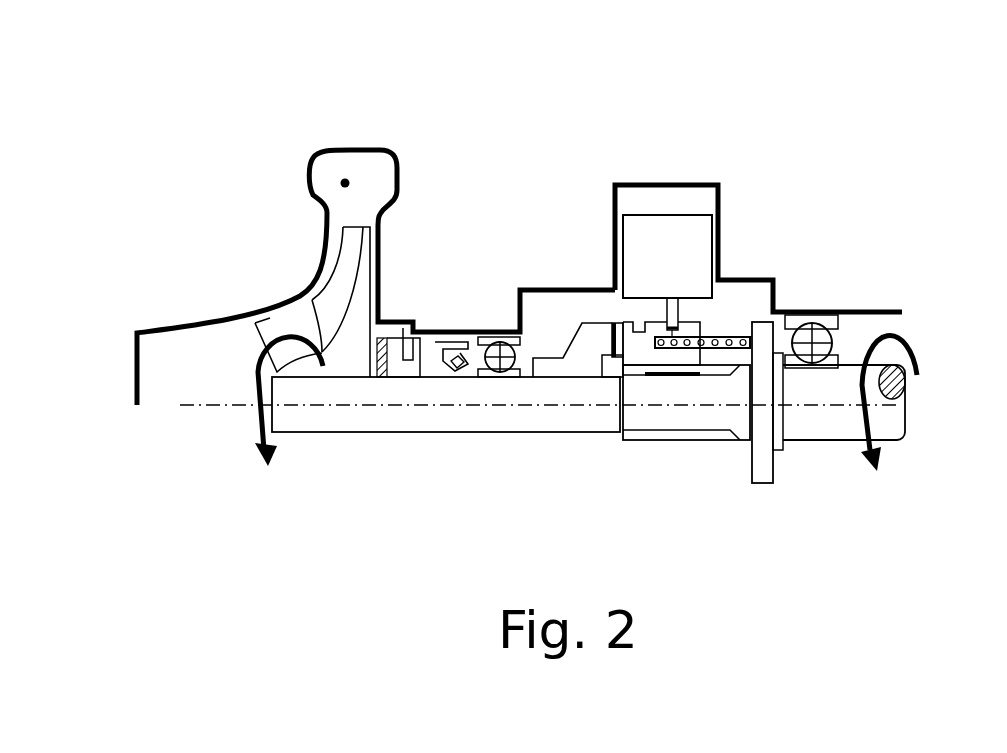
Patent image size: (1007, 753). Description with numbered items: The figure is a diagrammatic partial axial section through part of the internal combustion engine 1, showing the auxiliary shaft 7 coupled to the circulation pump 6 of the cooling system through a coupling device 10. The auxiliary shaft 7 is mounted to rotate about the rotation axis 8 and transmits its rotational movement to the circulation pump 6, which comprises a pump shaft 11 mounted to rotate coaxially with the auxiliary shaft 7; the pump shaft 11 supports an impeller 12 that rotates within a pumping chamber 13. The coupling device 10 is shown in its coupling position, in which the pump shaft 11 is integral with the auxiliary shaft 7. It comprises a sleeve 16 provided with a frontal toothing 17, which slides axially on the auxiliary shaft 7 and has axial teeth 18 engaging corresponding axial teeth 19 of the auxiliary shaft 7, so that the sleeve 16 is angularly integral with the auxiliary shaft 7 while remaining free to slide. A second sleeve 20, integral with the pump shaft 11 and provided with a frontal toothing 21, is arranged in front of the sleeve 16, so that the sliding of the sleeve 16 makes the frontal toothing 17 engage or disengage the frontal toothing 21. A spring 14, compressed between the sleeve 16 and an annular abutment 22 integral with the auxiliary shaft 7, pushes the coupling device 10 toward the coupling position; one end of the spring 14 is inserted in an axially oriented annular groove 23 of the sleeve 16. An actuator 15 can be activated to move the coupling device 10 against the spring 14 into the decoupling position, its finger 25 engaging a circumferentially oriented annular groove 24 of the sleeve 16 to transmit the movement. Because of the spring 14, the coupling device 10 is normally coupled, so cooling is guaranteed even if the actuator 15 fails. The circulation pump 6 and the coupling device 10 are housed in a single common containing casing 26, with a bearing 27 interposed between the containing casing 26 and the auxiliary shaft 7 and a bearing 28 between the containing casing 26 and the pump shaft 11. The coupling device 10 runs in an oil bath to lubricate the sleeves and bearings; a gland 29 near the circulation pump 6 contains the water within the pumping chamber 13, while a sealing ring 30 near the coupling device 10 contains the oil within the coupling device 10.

The internal combustion engine 1 is at (850, 588).
The circulation pump 6 is at (286, 104).
The auxiliary shaft 7 is at (880, 427).
The rotation axis 8 is at (198, 403).
The coupling device 10 is at (699, 140).
The pump shaft 11 is at (368, 420).
The impeller 12 is at (353, 328).
The pumping chamber 13 is at (346, 180).
The spring 14 is at (739, 336).
The actuator 15 is at (643, 224).
The sleeve 16 is at (645, 348).
The frontal toothing 17 is at (616, 333).
The axial teeth 18 is at (685, 441).
The axial teeth 19 is at (665, 367).
The sleeve 20 is at (563, 366).
The frontal toothing 21 is at (610, 353).
The annular abutment 22 is at (766, 462).
The axially oriented annular groove 23 is at (688, 348).
The circumferentially oriented annular groove 24 is at (671, 348).
The finger 25 is at (674, 317).
The containing casing 26 is at (893, 309).
The bearing 27 is at (811, 343).
The bearing 28 is at (497, 357).
The gland 29 is at (408, 352).
The sealing ring 30 is at (452, 360).